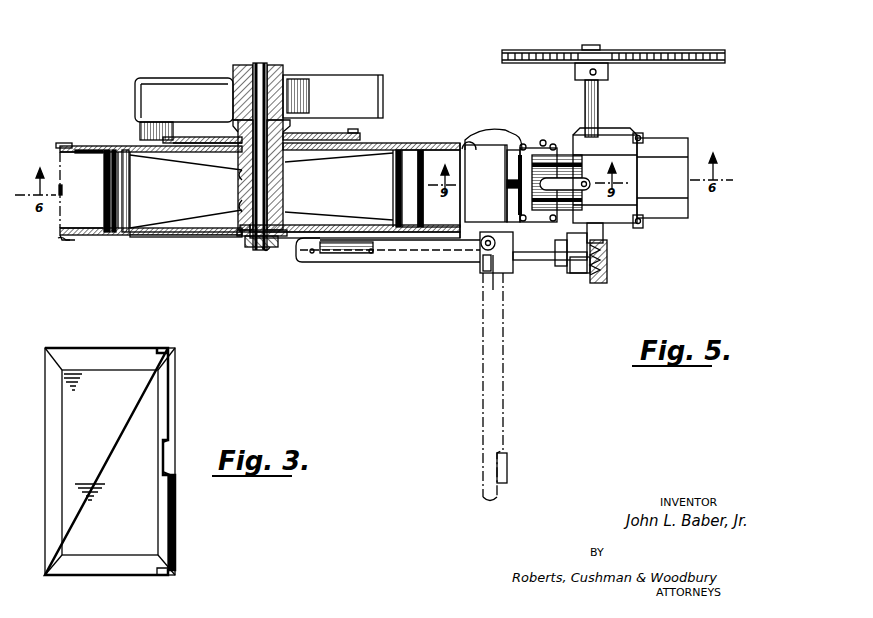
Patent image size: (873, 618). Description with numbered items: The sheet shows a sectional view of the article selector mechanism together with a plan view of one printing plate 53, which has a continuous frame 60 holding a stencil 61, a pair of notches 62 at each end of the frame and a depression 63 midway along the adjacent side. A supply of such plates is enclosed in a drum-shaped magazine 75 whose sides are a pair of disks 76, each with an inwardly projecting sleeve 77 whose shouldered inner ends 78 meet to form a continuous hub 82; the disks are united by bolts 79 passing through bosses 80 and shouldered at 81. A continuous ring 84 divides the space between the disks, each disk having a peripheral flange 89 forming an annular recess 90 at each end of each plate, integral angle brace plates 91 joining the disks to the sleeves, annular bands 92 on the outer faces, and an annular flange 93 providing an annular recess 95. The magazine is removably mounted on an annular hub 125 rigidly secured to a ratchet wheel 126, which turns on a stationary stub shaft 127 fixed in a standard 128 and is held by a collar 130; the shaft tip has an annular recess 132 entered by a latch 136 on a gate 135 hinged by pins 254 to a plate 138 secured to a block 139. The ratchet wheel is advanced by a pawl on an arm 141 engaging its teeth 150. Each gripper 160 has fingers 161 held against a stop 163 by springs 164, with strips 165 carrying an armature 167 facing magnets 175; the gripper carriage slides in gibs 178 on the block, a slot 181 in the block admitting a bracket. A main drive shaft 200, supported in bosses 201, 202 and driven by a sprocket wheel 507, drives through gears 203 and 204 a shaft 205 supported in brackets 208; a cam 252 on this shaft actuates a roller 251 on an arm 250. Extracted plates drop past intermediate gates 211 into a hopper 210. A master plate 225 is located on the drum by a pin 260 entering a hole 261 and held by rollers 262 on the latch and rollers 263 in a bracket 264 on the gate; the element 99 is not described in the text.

In FIG. 5, the printing plate 53 is at (259, 189).
In FIG. 3, the printing plate 53 is at (178, 520).
In FIG. 3, the frame 60 is at (45, 483).
In FIG. 3, the stencil 61 is at (110, 461).
In FIG. 3, the notches 62 is at (162, 348).
In FIG. 3, the depression 63 is at (175, 452).
In FIG. 5, the magazine 75 is at (385, 145).
In FIG. 5, the disks 76 is at (140, 148).
In FIG. 5, the sleeve 77 is at (240, 180).
In FIG. 5, the inner ends of sleeves 78 is at (288, 178).
In FIG. 5, the bolts 79 is at (136, 192).
In FIG. 5, the bosses 80 is at (108, 150).
In FIG. 5, the shoulders 81 is at (128, 162).
In FIG. 5, the hub 82 is at (310, 118).
In FIG. 5, the ring 84 is at (106, 232).
In FIG. 5, the flange 89 is at (66, 242).
In FIG. 5, the annular recess 90 is at (58, 242).
In FIG. 5, the angle brace plates 91 is at (238, 162).
In FIG. 5, the annular bands 92 is at (113, 237).
In FIG. 5, the annular flange 93 is at (235, 140).
In FIG. 5, the annular recess 95 is at (172, 240).
In FIG. 5, the end cap 99 is at (56, 222).
In FIG. 5, the annular hub 125 is at (225, 130).
In FIG. 5, the ratchet wheel 126 is at (352, 130).
In FIG. 5, the stub shaft 127 is at (260, 64).
In FIG. 5, the standard 128 is at (184, 109).
In FIG. 5, the collar 130 is at (282, 246).
In FIG. 5, the annular recess 132 is at (272, 252).
In FIG. 5, the gate 135 is at (402, 262).
In FIG. 5, the latch 136 is at (266, 250).
In FIG. 5, the plate 138 is at (550, 262).
In FIG. 5, the block 139 is at (675, 200).
In FIG. 5, the arm 141 is at (284, 125).
In FIG. 5, the teeth 150 is at (370, 136).
In FIG. 5, the gripper 160 is at (528, 145).
In FIG. 5, the fingers 161 is at (500, 130).
In FIG. 5, the stop 163 is at (545, 141).
In FIG. 5, the springs 164 is at (592, 135).
In FIG. 5, the strip 165 is at (512, 162).
In FIG. 5, the armature 167 is at (512, 200).
In FIG. 5, the magnets 175 is at (580, 170).
In FIG. 5, the gibs 178 is at (655, 138).
In FIG. 5, the slot 181 is at (672, 158).
In FIG. 5, the main drive shaft 200 is at (598, 100).
In FIG. 5, the boss 201 is at (605, 240).
In FIG. 5, the boss 202 is at (572, 140).
In FIG. 5, the gear 203 is at (608, 262).
In FIG. 5, the gear 204 is at (605, 280).
In FIG. 5, the shaft 205 is at (575, 273).
In FIG. 5, the brackets 208 is at (556, 262).
In FIG. 5, the hopper 210 is at (498, 186).
In FIG. 5, the intermediate gates 211 is at (468, 145).
In FIG. 5, the master plate 225 is at (246, 248).
In FIG. 5, the arm 250 is at (482, 250).
In FIG. 5, the roller 251 is at (484, 273).
In FIG. 5, the cam 252 is at (486, 300).
In FIG. 5, the pins 254 is at (478, 248).
In FIG. 5, the pin 260 is at (312, 256).
In FIG. 5, the hole 261 is at (310, 228).
In FIG. 5, the rollers 262 is at (260, 254).
In FIG. 5, the rollers 263 is at (345, 254).
In FIG. 5, the bracket 264 is at (366, 258).
In FIG. 5, the sprocket wheel 507 is at (622, 50).